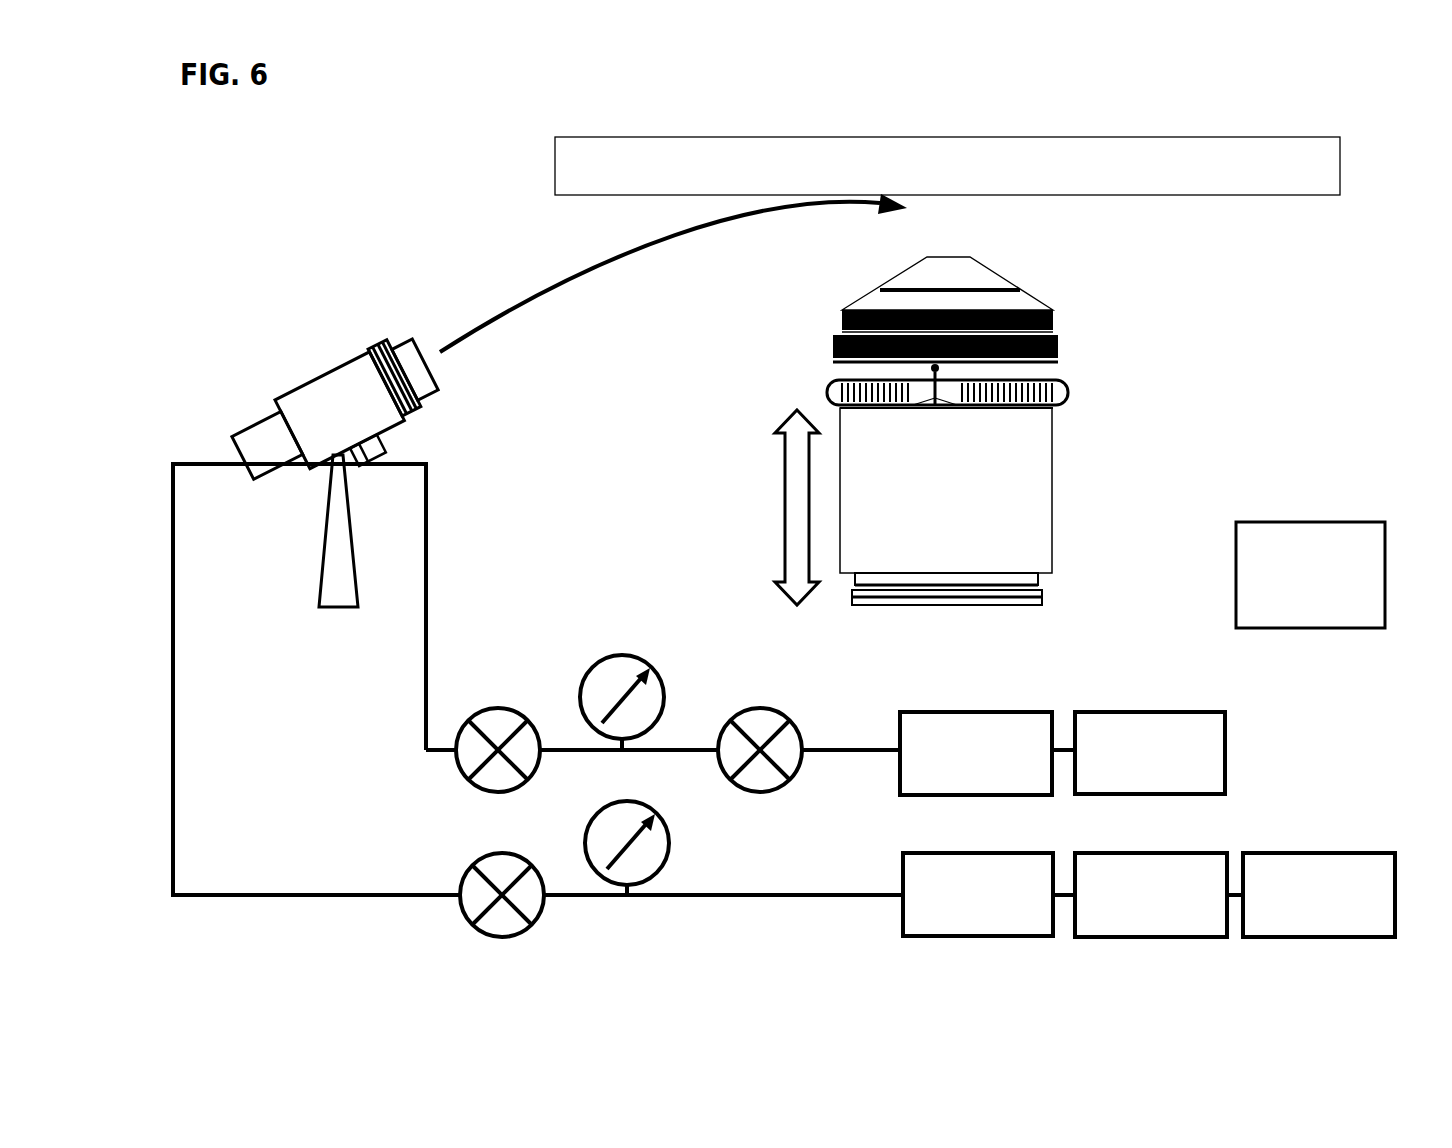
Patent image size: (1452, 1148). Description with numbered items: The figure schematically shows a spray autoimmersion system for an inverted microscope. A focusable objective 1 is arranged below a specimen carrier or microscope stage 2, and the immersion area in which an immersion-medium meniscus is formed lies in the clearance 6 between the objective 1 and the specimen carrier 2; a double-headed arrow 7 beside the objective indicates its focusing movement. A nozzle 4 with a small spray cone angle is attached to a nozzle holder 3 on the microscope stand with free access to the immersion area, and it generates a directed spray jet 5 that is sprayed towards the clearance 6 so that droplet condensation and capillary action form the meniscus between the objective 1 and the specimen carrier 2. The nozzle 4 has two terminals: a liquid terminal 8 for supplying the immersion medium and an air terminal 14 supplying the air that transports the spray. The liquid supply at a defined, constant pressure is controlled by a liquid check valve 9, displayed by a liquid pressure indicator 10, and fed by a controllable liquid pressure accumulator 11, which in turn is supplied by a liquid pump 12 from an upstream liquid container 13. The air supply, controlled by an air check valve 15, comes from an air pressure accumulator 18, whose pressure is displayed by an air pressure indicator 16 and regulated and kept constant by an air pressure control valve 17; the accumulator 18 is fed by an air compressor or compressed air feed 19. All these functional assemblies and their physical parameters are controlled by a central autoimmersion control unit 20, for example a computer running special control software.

The focusable objective 1 is at (1018, 500).
The specimen carrier 2 is at (1181, 171).
The nozzle holder 3 is at (340, 517).
The nozzle 4 is at (377, 405).
The directed spray jet 5 is at (573, 283).
The clearance 6 is at (942, 195).
The objective movement direction 7 is at (790, 551).
The liquid terminal 8 is at (268, 452).
The liquid check valve 9 is at (483, 863).
The liquid pressure indicator 10 is at (640, 843).
The controllable liquid pressure accumulator 11 is at (993, 863).
The liquid pump 12 is at (1182, 867).
The liquid container 13 is at (1333, 870).
The air terminal 14 is at (377, 450).
The air check valve 15 is at (492, 723).
The air pressure indicator 16 is at (640, 705).
The air pressure control valve 17 is at (763, 722).
The air pressure accumulator 18 is at (983, 725).
The air compressor 19 is at (1170, 722).
The central autoimmersion control unit 20 is at (1296, 540).